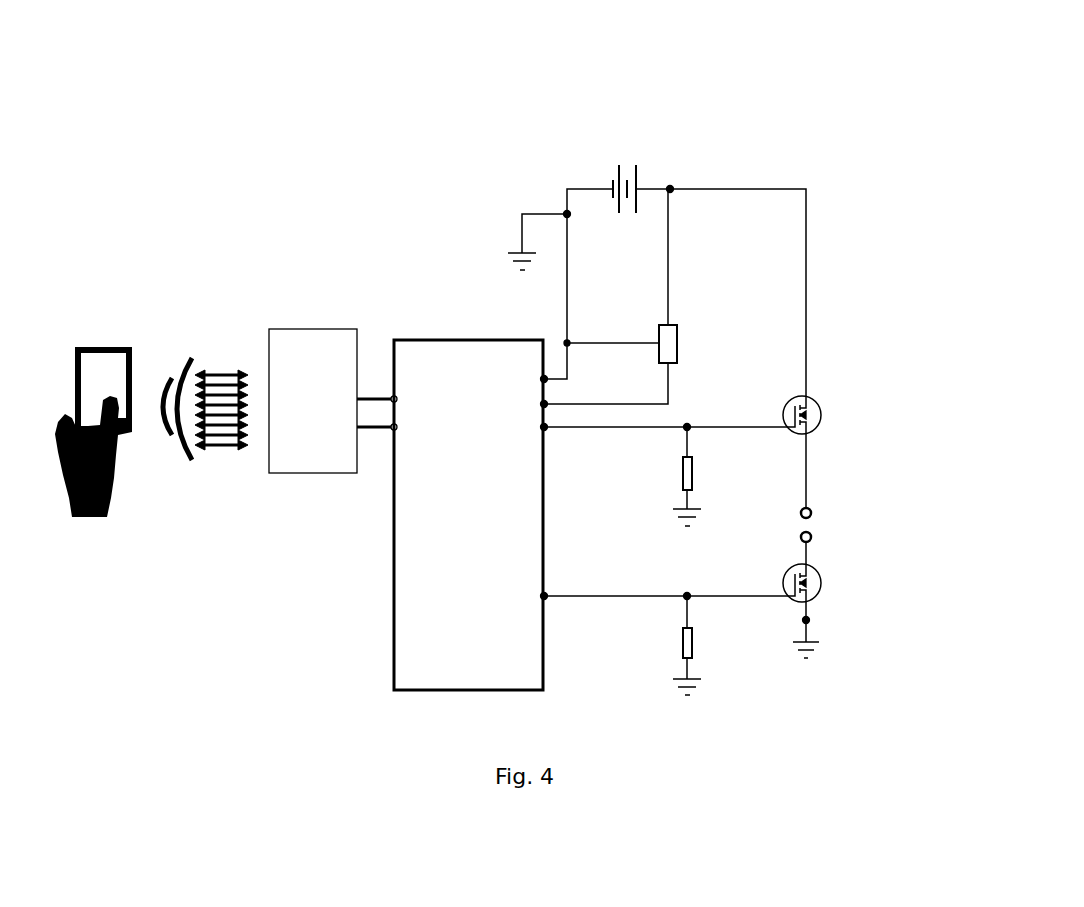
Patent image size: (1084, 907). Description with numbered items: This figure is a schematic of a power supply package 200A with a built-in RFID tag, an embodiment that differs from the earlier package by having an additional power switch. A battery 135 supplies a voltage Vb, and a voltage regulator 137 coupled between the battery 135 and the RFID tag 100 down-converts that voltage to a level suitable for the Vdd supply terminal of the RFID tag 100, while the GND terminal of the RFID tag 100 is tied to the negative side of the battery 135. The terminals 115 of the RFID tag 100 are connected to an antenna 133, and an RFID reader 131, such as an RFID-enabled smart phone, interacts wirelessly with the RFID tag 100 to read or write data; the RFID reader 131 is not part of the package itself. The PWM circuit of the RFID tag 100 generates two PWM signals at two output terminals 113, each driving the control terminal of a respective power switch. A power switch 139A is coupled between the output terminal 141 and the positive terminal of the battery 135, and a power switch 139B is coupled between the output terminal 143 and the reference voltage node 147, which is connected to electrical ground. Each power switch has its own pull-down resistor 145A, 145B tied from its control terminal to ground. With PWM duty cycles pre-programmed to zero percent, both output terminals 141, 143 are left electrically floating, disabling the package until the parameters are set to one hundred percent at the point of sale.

The power supply package 200A is at (430, 82).
The RFID reader 131 is at (98, 338).
The antenna 133 is at (302, 328).
The terminals 115 is at (392, 396).
The RFID tag 100 is at (471, 515).
The output terminals 113 is at (548, 432).
The battery 135 is at (623, 160).
The voltage regulator 137 is at (682, 328).
The power switch 139A is at (822, 420).
The power switch 139B is at (832, 587).
The output terminal 141 is at (813, 510).
The output terminal 143 is at (820, 537).
The pull-down resistor 145A is at (697, 480).
The pull-down resistor 145B is at (698, 650).
The reference voltage node 147 is at (817, 620).